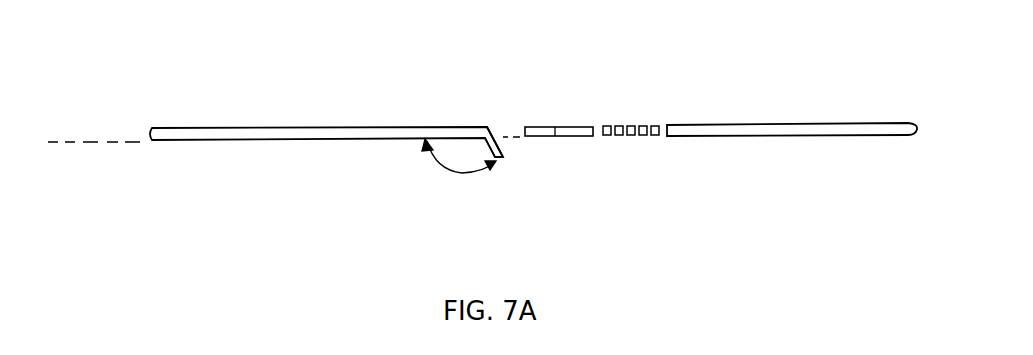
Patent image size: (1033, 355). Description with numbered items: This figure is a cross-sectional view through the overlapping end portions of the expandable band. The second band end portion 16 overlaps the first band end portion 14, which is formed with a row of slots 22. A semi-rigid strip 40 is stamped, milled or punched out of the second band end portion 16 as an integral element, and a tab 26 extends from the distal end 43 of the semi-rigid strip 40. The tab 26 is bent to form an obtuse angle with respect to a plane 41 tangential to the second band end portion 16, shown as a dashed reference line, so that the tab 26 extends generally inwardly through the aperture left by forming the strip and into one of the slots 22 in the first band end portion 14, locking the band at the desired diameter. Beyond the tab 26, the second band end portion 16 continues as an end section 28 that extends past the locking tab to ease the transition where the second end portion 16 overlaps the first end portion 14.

The first band end portion 14 is at (571, 142).
The second band end portion 16 is at (280, 82).
The slots 22 is at (607, 125).
The tab 26 is at (503, 157).
The end section 28 is at (538, 123).
The semi-rigid strip 40 is at (487, 126).
The plane 41 is at (88, 145).
The distal end 43 is at (493, 135).